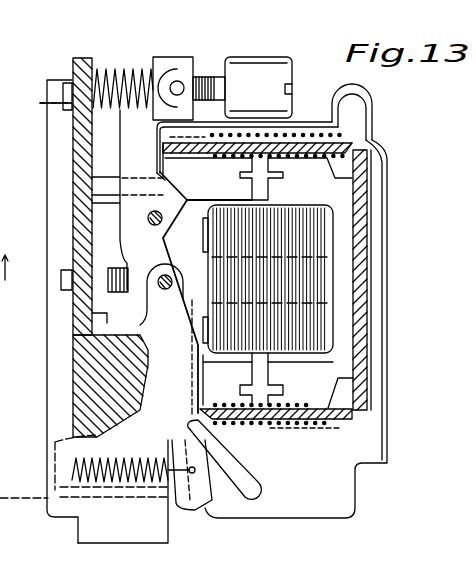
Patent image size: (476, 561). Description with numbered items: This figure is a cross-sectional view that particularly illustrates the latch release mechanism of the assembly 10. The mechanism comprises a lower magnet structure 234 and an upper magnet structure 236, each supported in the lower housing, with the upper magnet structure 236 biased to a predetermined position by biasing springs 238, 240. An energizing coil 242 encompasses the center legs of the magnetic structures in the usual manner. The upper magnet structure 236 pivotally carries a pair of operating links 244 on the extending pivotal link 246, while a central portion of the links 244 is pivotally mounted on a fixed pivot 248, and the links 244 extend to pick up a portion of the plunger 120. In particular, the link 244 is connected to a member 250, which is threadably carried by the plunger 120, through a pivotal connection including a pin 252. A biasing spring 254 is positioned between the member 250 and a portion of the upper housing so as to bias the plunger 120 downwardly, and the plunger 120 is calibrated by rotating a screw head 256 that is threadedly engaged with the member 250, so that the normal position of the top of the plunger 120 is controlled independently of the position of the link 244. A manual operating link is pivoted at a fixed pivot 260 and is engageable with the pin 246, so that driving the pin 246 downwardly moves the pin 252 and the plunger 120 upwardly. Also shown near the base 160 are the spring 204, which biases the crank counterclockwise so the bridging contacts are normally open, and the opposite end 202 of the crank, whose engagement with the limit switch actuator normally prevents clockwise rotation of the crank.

The relay assembly 10 is at (8, 256).
The plunger 120 is at (47, 80).
The base 160 is at (203, 557).
The opposite end of crank 202 is at (248, 488).
The spring 204 is at (147, 462).
The lower magnet structure 234 is at (348, 192).
The upper magnet structure 236 is at (238, 422).
The biasing spring 238 is at (287, 424).
The biasing spring 240 is at (303, 140).
The energizing coil 242 is at (305, 172).
The operating links 244 is at (150, 147).
The pivotal link 246 is at (155, 225).
The fixed pivot 248 is at (172, 207).
The member 250 is at (155, 60).
The pin 252 is at (176, 81).
The biasing spring 254 is at (110, 67).
The screw head 256 is at (245, 62).
The fixed pivot 260 is at (175, 437).